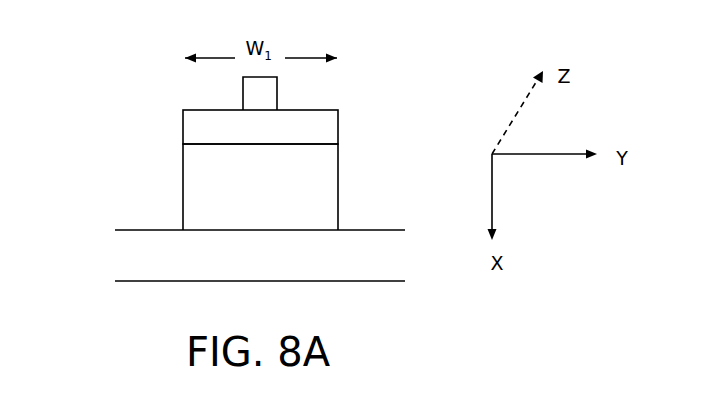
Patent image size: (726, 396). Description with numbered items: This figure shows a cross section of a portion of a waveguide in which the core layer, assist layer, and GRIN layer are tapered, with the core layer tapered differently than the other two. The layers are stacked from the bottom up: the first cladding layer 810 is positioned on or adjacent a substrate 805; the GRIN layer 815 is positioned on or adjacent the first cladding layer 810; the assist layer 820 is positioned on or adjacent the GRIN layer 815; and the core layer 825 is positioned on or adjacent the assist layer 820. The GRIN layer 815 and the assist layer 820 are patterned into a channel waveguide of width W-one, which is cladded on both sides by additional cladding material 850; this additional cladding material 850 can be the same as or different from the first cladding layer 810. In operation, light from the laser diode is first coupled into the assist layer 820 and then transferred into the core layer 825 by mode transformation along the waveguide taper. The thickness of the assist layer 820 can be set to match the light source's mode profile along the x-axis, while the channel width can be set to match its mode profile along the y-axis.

The substrate 805 is at (260, 293).
The first cladding layer 810 is at (260, 249).
The GRIN layer 815 is at (260, 187).
The assist layer 820 is at (260, 127).
The core layer 825 is at (233, 96).
The additional cladding material 850 is at (245, 165).